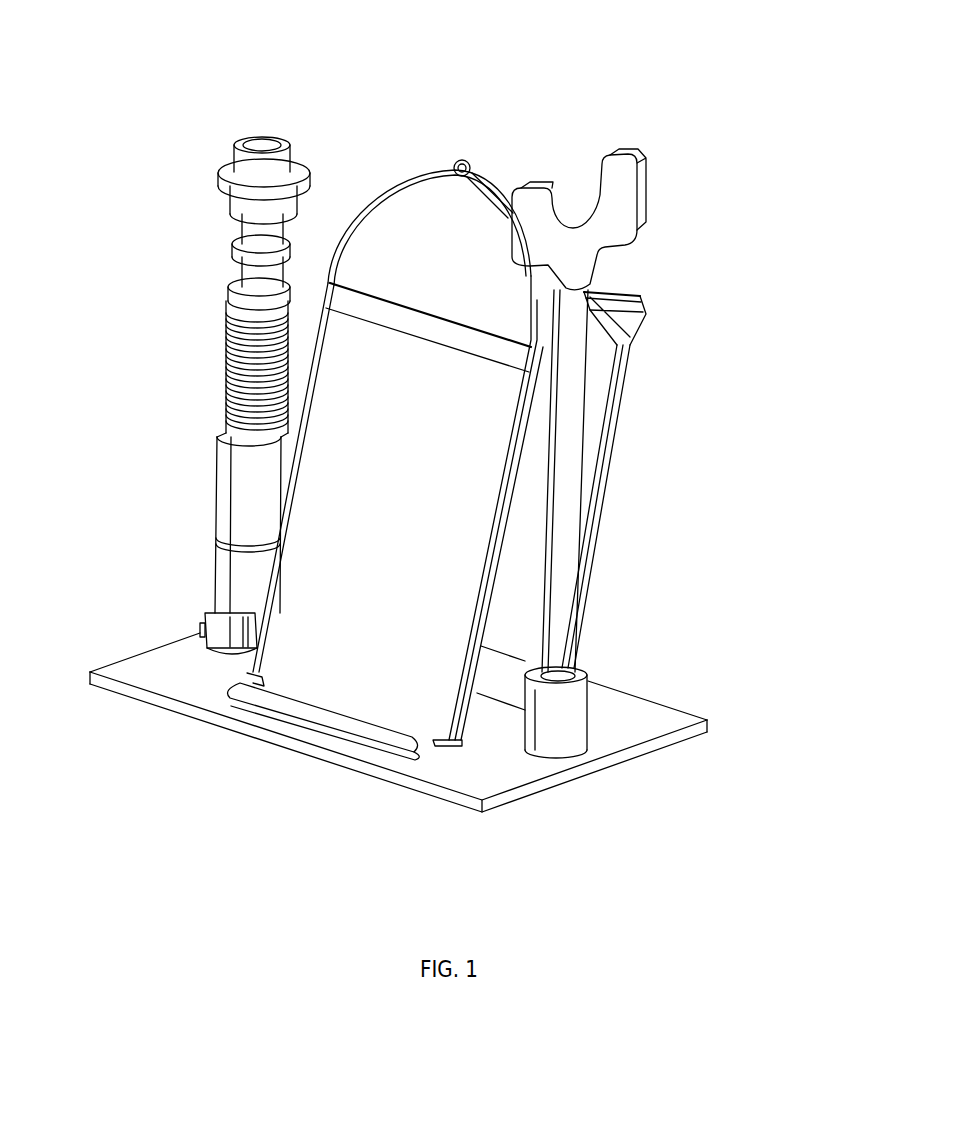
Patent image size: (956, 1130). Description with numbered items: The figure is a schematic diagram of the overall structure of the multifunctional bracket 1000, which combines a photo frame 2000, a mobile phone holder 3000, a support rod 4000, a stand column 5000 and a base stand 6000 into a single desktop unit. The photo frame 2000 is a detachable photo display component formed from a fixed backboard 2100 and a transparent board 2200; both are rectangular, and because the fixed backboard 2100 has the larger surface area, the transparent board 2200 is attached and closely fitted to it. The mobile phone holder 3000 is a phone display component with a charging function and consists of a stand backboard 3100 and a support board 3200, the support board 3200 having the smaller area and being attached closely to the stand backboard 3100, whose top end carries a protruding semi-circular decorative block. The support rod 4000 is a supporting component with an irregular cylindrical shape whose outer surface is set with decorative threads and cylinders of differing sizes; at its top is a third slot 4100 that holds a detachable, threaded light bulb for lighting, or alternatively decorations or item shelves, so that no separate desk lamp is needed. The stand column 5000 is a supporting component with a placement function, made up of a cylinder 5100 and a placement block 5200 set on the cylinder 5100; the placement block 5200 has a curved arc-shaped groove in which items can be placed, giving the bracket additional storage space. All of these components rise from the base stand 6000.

The multifunctional bracket 1000 is at (208, 762).
The photo frame 2000 is at (633, 277).
The fixed backboard 2100 is at (640, 312).
The transparent board 2200 is at (600, 428).
The mobile phone holder 3000 is at (357, 352).
The stand backboard 3100 is at (477, 655).
The support board 3200 is at (353, 677).
The support rod 4000 is at (216, 176).
The third slot 4100 is at (268, 142).
The stand column 5000 is at (613, 143).
The cylinder 5100 is at (575, 617).
The placement block 5200 is at (600, 313).
The base stand 6000 is at (623, 765).